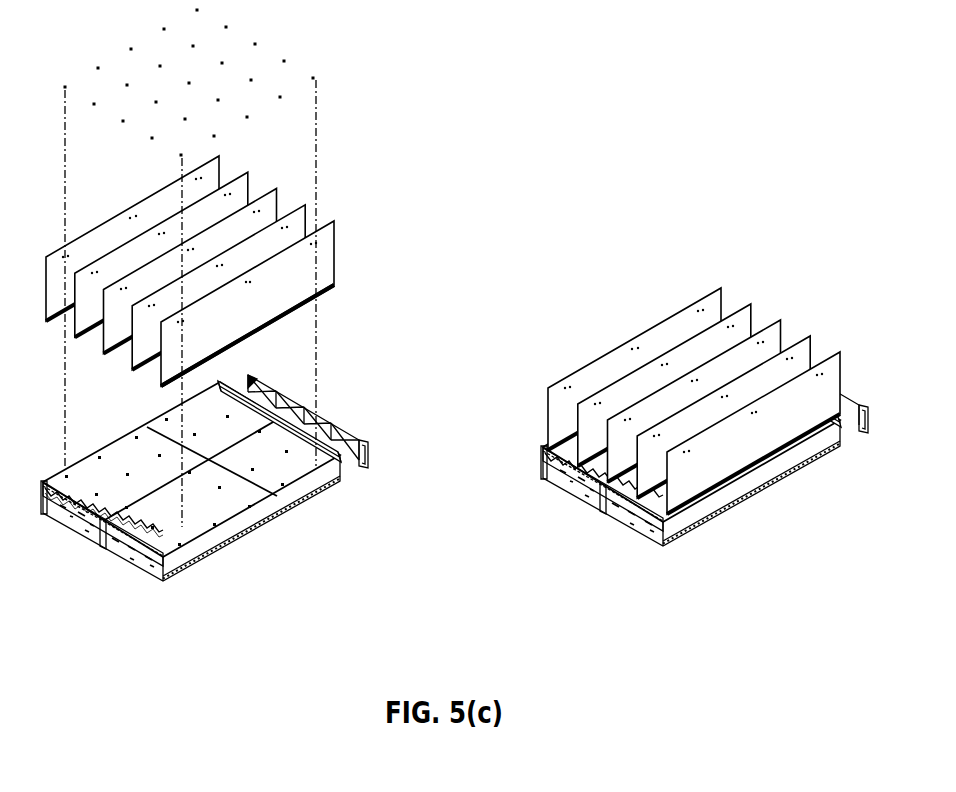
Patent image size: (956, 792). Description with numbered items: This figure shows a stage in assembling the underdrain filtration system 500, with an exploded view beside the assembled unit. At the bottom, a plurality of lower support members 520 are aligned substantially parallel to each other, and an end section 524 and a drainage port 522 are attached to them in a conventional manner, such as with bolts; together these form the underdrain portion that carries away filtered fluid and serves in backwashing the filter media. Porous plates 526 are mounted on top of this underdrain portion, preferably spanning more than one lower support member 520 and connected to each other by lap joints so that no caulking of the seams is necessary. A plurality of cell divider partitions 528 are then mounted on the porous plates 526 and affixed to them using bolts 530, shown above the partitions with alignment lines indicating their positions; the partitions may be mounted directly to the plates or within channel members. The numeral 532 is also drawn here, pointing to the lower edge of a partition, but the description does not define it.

The filtration system 500 is at (821, 527).
The lower support member 520 is at (278, 505).
The drainage port 522 is at (338, 428).
The end section 524 is at (118, 552).
The porous plate 526 is at (125, 448).
The cell divider partition 528 is at (292, 288).
The bolt 530 is at (318, 72).
The panel bottom edge 532 is at (217, 360).